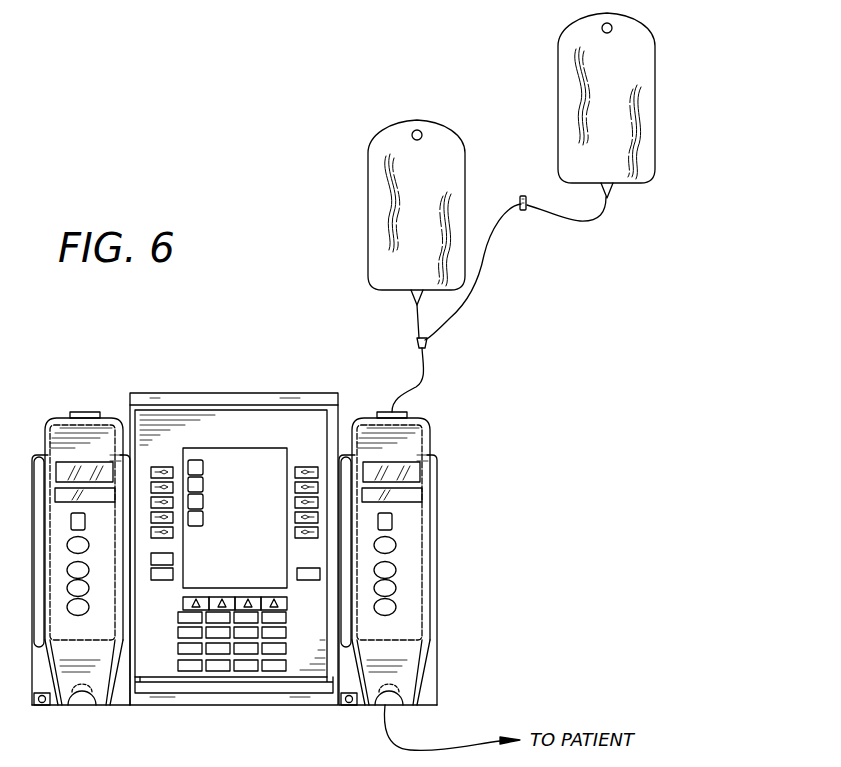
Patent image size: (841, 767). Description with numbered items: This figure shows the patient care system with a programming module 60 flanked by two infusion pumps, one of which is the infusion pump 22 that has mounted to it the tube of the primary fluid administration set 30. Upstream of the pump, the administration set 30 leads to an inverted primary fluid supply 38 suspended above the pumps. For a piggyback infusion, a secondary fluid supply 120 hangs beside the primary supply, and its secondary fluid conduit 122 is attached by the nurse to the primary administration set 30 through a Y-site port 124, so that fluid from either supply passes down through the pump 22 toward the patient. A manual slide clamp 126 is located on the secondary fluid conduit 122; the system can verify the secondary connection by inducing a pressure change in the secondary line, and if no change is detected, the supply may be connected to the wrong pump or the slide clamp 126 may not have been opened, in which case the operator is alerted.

The infusion pump 22 is at (442, 478).
The programming module 60 is at (260, 393).
The primary fluid supply 38 is at (380, 230).
The secondary fluid supply 120 is at (655, 93).
The secondary fluid conduit 122 is at (603, 213).
The Y-site port 124 is at (428, 345).
The slide clamp 126 is at (523, 210).
The fluid administration set 30 is at (415, 320).